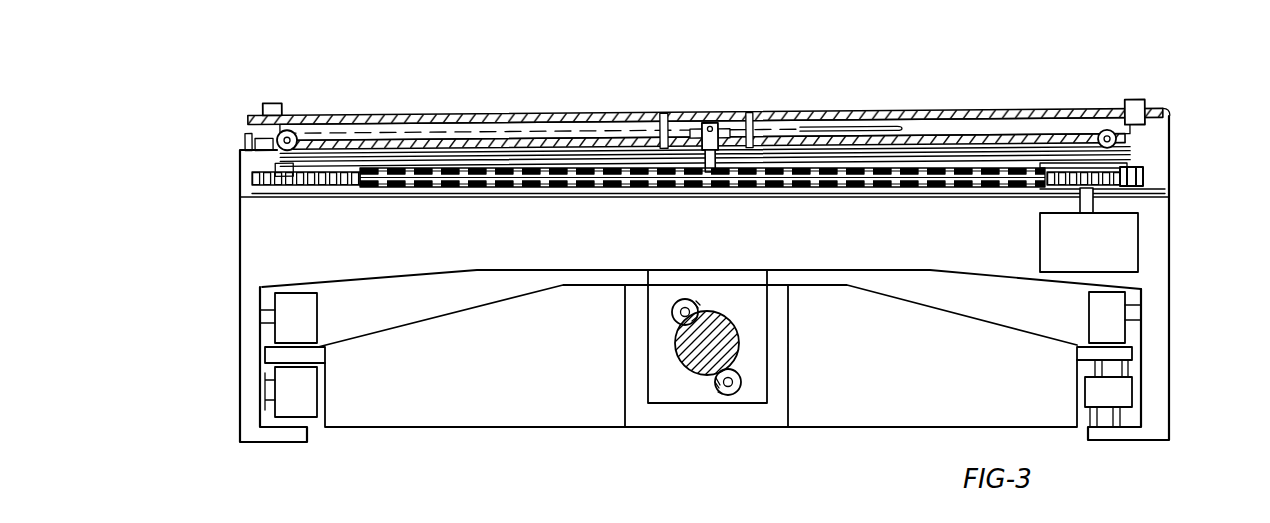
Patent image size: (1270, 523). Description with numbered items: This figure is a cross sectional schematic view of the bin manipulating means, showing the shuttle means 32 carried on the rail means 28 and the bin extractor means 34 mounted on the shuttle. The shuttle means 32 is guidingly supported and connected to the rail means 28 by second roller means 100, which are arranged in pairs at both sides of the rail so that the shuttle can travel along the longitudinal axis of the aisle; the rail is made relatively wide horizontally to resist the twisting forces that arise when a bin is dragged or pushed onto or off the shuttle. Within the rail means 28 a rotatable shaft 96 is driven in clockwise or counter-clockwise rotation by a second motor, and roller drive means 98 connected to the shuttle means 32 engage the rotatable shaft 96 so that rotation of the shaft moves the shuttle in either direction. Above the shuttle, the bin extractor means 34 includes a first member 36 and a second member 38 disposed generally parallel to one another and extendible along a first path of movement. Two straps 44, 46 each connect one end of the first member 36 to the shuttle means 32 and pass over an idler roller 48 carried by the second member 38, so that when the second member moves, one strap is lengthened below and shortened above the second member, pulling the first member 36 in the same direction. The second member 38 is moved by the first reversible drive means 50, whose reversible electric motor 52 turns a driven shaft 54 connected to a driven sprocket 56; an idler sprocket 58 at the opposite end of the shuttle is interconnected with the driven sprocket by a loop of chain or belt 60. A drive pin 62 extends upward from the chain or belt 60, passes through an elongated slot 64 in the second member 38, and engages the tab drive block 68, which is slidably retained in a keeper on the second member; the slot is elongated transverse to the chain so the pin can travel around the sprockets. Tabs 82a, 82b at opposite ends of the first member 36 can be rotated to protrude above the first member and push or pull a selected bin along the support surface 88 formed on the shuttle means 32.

The rail means 28 is at (813, 430).
The shuttle means 32 is at (1172, 263).
The bin extractor means 34 is at (236, 170).
The first member 36 is at (557, 90).
The second member 38 is at (438, 115).
The strap 44 is at (320, 120).
The strap 46 is at (900, 158).
The idler roller 48 is at (289, 132).
The first reversible drive means 50 is at (1015, 205).
The reversible electric motor 52 is at (1052, 243).
The driven shaft 54 is at (1100, 204).
The driven sprocket 56 is at (1143, 178).
The idler sprocket 58 is at (321, 186).
The chain or belt 60 is at (570, 188).
The drive pin 62 is at (732, 178).
The elongated slot 64 is at (722, 130).
The tab drive block 68 is at (672, 132).
The tab 82a is at (262, 104).
The tab 82b is at (1125, 101).
The support surface 88 is at (375, 112).
The rotatable shaft 96 is at (737, 351).
The roller drive means 98 is at (745, 318).
The second roller means 100 is at (323, 316).